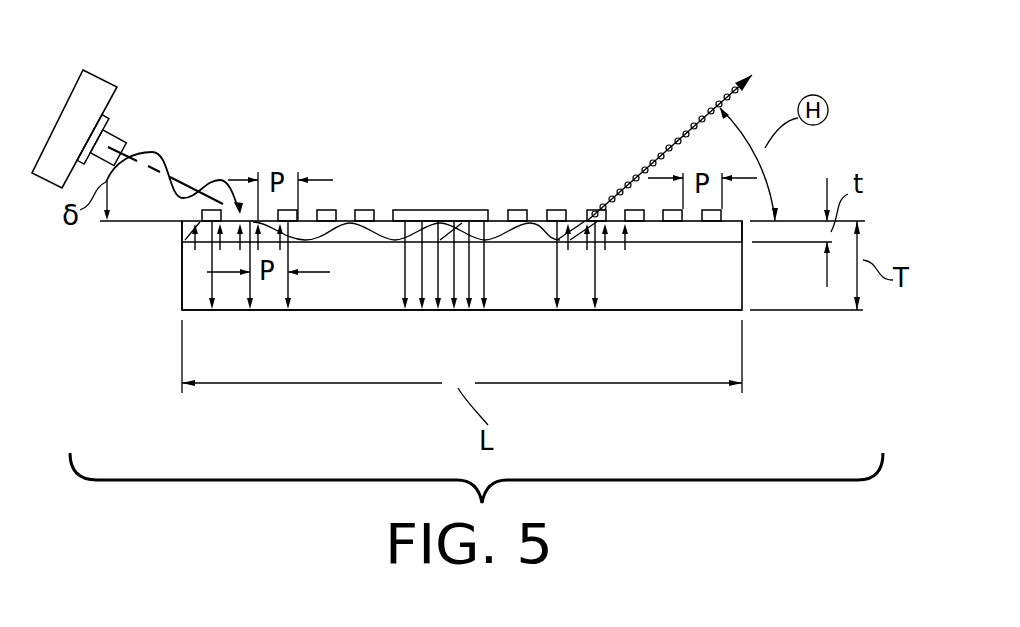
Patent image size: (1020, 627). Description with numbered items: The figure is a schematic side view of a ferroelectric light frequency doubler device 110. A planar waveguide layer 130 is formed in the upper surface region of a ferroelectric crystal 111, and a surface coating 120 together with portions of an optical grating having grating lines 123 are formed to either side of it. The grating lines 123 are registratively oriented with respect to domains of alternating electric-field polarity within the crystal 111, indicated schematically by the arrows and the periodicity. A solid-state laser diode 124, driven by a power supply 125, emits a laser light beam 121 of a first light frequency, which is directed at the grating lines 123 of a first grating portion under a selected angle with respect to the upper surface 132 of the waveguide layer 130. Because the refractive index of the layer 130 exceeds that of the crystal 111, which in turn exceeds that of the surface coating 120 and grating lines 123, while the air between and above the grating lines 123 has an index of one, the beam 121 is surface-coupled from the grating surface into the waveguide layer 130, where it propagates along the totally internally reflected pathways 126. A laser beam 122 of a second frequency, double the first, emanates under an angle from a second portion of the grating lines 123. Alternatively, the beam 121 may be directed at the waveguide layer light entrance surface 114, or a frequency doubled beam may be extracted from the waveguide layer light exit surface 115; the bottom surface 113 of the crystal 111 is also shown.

The ferroelectric light frequency doubler device 110 is at (387, 105).
The ferroelectric crystal 111 is at (182, 308).
The bottom surface 113 is at (495, 312).
The waveguide layer light entrance surface 114 is at (181, 250).
The waveguide layer light exit surface 115 is at (743, 233).
The surface coating 120 is at (475, 208).
The laser light beam 121 is at (157, 152).
The laser beam 122 is at (702, 122).
The grating lines 123 is at (370, 208).
The solid-state laser diode 124 is at (118, 128).
The power supply 125 is at (90, 71).
The totally internally reflected pathways 126 is at (468, 233).
The planar waveguide layer 130 is at (700, 233).
The upper surface of waveguide layer 132 is at (652, 228).